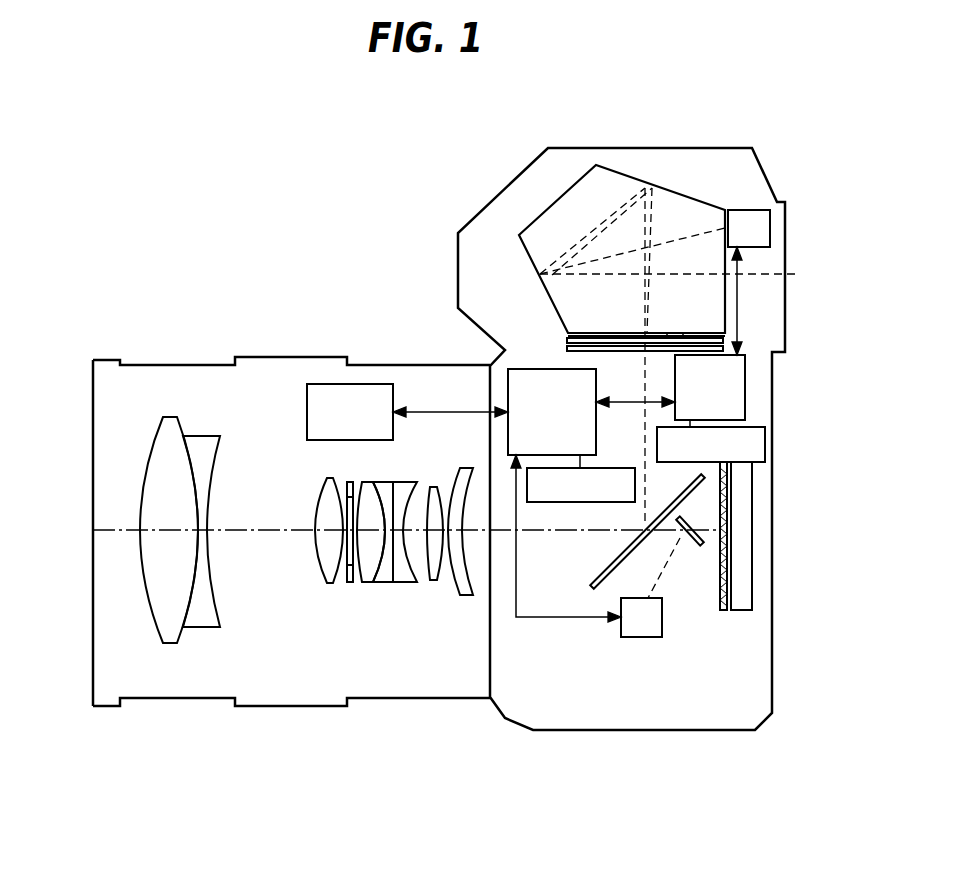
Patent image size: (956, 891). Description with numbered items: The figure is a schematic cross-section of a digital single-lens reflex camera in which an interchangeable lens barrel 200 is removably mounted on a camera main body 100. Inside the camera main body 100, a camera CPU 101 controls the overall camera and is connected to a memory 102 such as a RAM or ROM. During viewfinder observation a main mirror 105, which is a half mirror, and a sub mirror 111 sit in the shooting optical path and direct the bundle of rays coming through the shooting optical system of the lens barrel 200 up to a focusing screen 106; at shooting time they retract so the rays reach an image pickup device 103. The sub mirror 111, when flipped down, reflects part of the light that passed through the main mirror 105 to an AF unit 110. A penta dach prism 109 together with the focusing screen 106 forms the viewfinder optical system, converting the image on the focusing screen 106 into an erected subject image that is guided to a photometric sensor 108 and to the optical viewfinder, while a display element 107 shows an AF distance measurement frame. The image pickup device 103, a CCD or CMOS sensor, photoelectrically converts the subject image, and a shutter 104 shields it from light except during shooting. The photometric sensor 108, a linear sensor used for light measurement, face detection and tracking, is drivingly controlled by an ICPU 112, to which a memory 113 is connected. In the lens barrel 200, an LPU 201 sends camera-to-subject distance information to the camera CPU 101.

The camera main body 100 is at (750, 665).
The camera CPU 101 is at (553, 369).
The memory 102 is at (587, 502).
The image pickup device 103 is at (743, 570).
The shutter 104 is at (727, 478).
The main mirror 105 is at (598, 590).
The focusing screen 106 is at (725, 348).
The display element 107 is at (683, 333).
The photometric sensor 108 is at (750, 207).
The penta dach prism 109 is at (543, 227).
The AF unit 110 is at (662, 618).
The sub mirror 111 is at (687, 520).
The ICPU 112 is at (745, 378).
The memory 113 is at (765, 432).
The lens barrel 200 is at (115, 410).
The LPU 201 is at (327, 383).